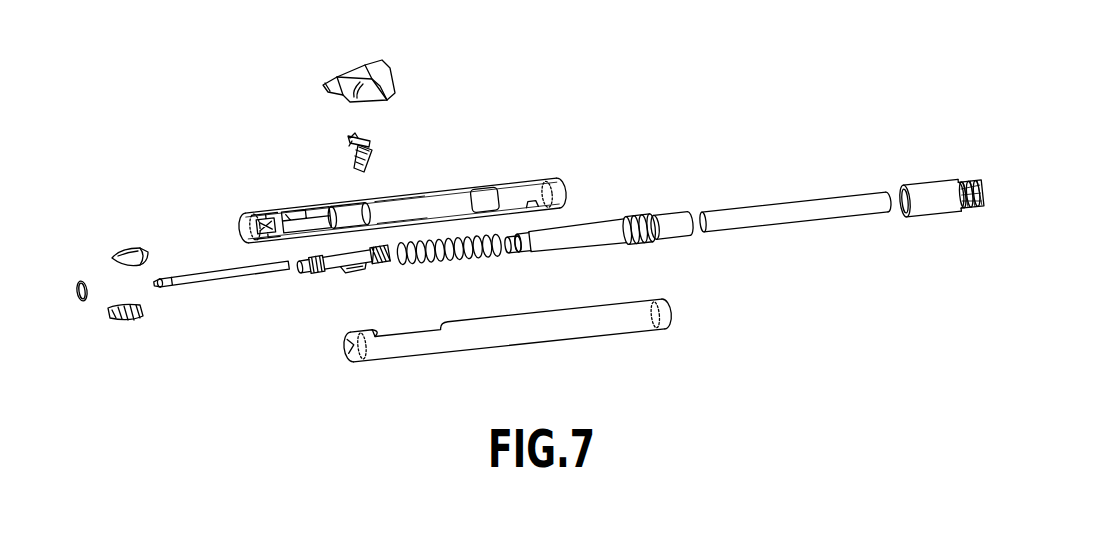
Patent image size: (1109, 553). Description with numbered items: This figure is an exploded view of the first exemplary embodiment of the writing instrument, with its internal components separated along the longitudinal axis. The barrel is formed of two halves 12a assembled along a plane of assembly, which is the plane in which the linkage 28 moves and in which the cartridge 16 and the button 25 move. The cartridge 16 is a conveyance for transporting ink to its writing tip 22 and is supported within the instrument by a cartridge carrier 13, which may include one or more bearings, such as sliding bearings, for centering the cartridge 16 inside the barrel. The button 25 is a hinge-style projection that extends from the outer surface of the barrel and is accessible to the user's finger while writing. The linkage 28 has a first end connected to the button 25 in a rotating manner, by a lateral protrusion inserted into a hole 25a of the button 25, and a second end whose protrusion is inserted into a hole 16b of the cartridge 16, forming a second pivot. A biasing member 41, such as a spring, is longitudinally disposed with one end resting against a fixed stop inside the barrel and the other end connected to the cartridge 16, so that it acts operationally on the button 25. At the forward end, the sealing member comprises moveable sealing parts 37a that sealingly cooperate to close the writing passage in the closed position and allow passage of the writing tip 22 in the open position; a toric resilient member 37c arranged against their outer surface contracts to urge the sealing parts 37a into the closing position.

The barrel half 12a is at (507, 182).
The cartridge carrier 13 is at (476, 207).
The cartridge 16 is at (330, 273).
The hole of the cartridge 16b is at (348, 278).
The writing tip 22 is at (203, 284).
The button 25 is at (377, 60).
The hole of the button 25a is at (380, 87).
The linkage 28 is at (372, 144).
The sealing part 37a is at (135, 247).
The resilient member 37c is at (78, 281).
The biasing member 41 is at (477, 261).